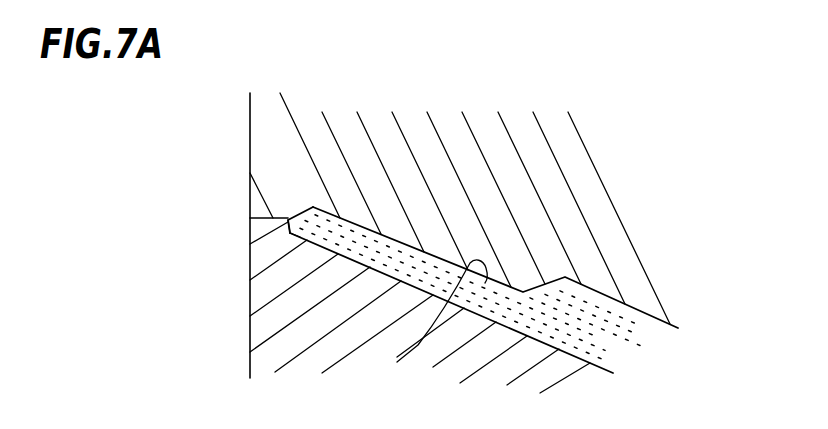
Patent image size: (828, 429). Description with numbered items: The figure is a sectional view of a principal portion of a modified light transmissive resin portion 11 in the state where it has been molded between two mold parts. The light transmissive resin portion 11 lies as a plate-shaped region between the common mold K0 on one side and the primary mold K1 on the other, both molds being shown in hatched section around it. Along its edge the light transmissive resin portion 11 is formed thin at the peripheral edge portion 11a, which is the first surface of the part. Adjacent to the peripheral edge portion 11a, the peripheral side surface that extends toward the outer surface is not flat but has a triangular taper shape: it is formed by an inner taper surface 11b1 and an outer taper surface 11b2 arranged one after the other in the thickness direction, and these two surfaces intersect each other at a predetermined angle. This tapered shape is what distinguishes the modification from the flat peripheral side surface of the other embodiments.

The primary mold K1 is at (284, 138).
The common mold K0 is at (277, 323).
The light transmissive resin portion 11 is at (613, 338).
The peripheral edge portion 11a is at (433, 327).
The inner taper surface 11b1 is at (289, 218).
The outer taper surface 11b2 is at (288, 232).